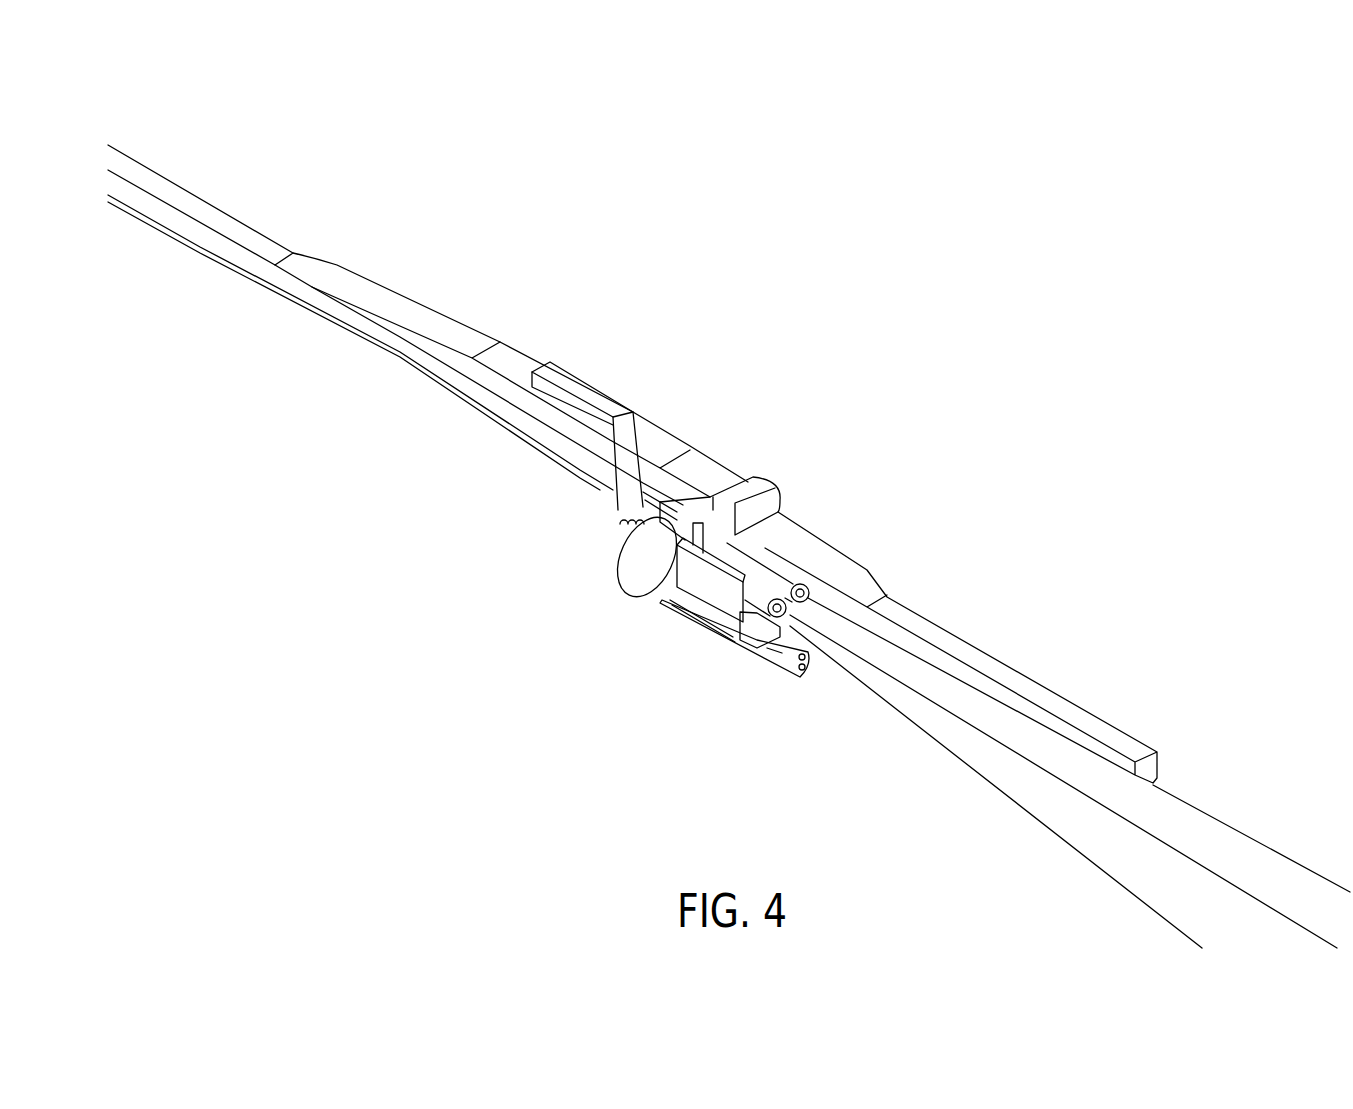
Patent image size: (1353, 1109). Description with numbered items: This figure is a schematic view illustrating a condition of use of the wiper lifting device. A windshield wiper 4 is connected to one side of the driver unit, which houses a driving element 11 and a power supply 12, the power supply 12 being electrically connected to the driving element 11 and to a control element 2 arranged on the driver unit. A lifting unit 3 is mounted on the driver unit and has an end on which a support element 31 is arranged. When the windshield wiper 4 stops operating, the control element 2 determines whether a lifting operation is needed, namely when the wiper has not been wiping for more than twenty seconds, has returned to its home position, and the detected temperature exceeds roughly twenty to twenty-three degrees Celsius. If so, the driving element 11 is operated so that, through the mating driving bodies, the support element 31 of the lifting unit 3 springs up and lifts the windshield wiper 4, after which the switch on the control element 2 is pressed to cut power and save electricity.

The control element 2 is at (760, 638).
The lifting unit 3 is at (627, 573).
The support element 31 is at (713, 635).
The windshield wiper 4 is at (917, 620).
The driving element 11 is at (757, 487).
The power supply 12 is at (763, 568).